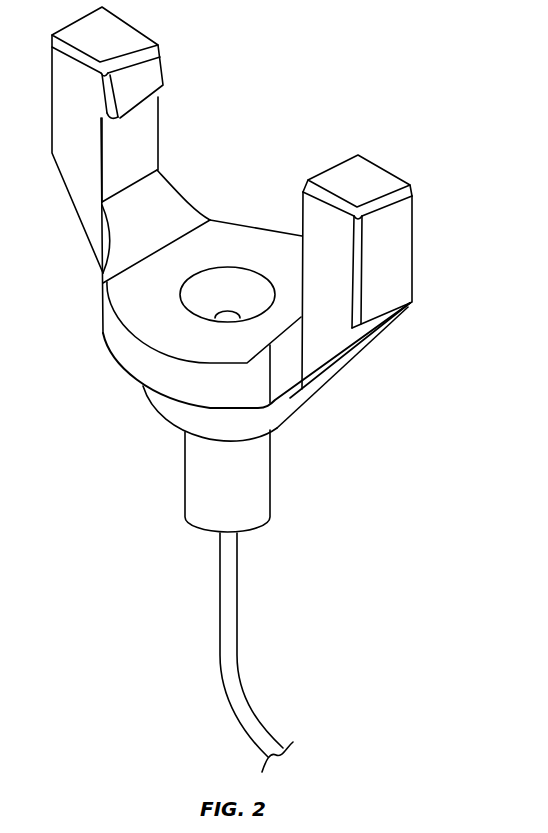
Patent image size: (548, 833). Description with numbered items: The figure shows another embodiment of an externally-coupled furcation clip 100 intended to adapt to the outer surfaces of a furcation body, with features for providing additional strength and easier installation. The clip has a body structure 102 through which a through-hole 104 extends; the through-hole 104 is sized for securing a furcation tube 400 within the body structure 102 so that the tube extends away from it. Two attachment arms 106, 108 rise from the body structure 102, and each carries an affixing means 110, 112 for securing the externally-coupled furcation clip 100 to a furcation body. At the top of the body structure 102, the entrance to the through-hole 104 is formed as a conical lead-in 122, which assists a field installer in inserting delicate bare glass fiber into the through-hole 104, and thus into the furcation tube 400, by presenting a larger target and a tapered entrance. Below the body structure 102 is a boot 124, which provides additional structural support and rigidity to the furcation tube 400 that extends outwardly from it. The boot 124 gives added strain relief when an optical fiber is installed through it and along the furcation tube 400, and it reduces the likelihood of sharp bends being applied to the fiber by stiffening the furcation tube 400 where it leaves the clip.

The externally-coupled furcation clip 100 is at (352, 93).
The body structure 102 is at (133, 360).
The through-hole 104 is at (229, 312).
The attachment arm 106 is at (87, 183).
The attachment arm 108 is at (333, 282).
The affixing means 110 is at (147, 68).
The affixing means 112 is at (318, 164).
The conical lead-in 122 is at (207, 282).
The boot 124 is at (197, 488).
The furcation tube 400 is at (230, 637).